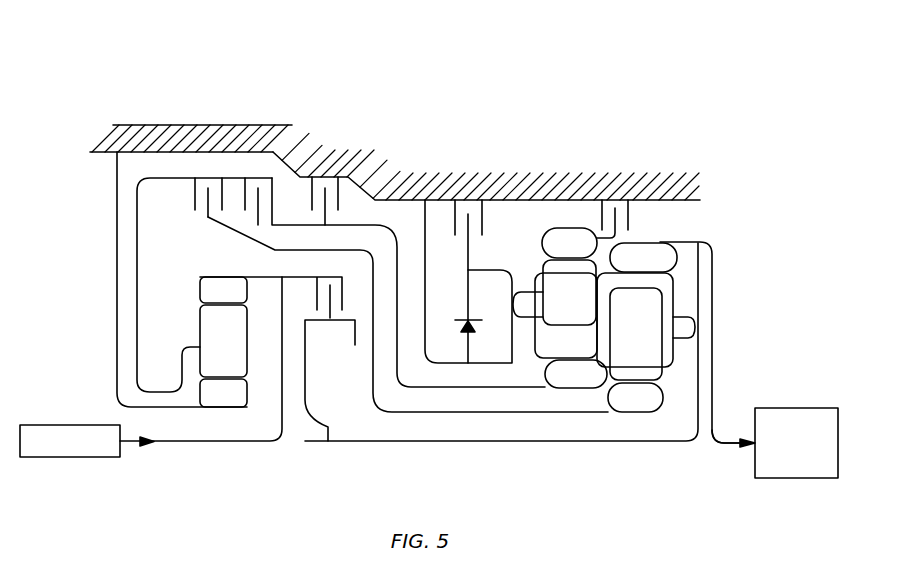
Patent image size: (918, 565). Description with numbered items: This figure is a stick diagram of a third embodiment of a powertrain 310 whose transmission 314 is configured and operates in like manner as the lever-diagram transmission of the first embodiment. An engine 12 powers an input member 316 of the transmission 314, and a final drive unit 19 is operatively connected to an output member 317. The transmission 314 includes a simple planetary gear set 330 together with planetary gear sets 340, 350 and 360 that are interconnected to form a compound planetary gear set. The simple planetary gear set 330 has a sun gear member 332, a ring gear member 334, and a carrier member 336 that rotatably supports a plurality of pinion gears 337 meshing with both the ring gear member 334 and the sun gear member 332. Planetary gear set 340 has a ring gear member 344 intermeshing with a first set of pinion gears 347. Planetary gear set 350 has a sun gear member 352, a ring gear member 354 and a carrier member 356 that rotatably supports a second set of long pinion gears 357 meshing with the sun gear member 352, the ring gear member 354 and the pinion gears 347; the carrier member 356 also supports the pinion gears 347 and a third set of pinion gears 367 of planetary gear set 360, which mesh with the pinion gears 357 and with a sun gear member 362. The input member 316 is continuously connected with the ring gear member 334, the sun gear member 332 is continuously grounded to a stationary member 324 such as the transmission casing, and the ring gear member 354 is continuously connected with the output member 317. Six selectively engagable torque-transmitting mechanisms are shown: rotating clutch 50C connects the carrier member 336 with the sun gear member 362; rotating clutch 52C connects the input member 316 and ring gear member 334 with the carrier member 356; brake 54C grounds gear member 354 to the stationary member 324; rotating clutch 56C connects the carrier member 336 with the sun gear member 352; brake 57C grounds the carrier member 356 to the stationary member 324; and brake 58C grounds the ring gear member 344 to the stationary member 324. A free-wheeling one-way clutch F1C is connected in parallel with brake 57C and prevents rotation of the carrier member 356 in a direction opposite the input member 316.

The powertrain 310 is at (396, 86).
The transmission 314 is at (537, 104).
The stationary member 324 is at (201, 125).
The torque-transmitting mechanism 56C is at (265, 213).
The torque-transmitting mechanism 54C is at (340, 213).
The torque-transmitting mechanism 57C is at (479, 240).
The planetary gear set 340 is at (564, 216).
The torque-transmitting mechanism 58C is at (627, 234).
The carrier member 356 is at (697, 328).
The final drive unit 19 is at (822, 408).
The torque-transmitting mechanism 50C is at (200, 214).
The carrier member 336 is at (190, 346).
The ring gear member 334 is at (223, 290).
The pinion gears 337 is at (223, 341).
The sun gear member 332 is at (223, 393).
The ring gear member 344 is at (569, 243).
The pinion gears 347 is at (569, 292).
The pinion gears 357 is at (566, 315).
The sun gear member 352 is at (576, 374).
The ring gear member 354 is at (643, 257).
The pinion gears 367 is at (636, 334).
The sun gear member 362 is at (635, 397).
The engine 12 is at (90, 458).
The input member 316 is at (128, 443).
The simple planetary gear set 330 is at (210, 427).
The torque-transmitting mechanism 52C is at (311, 320).
The one-way clutch F1C is at (450, 330).
The planetary gear set 350 is at (576, 396).
The planetary gear set 360 is at (658, 423).
The output member 317 is at (728, 446).